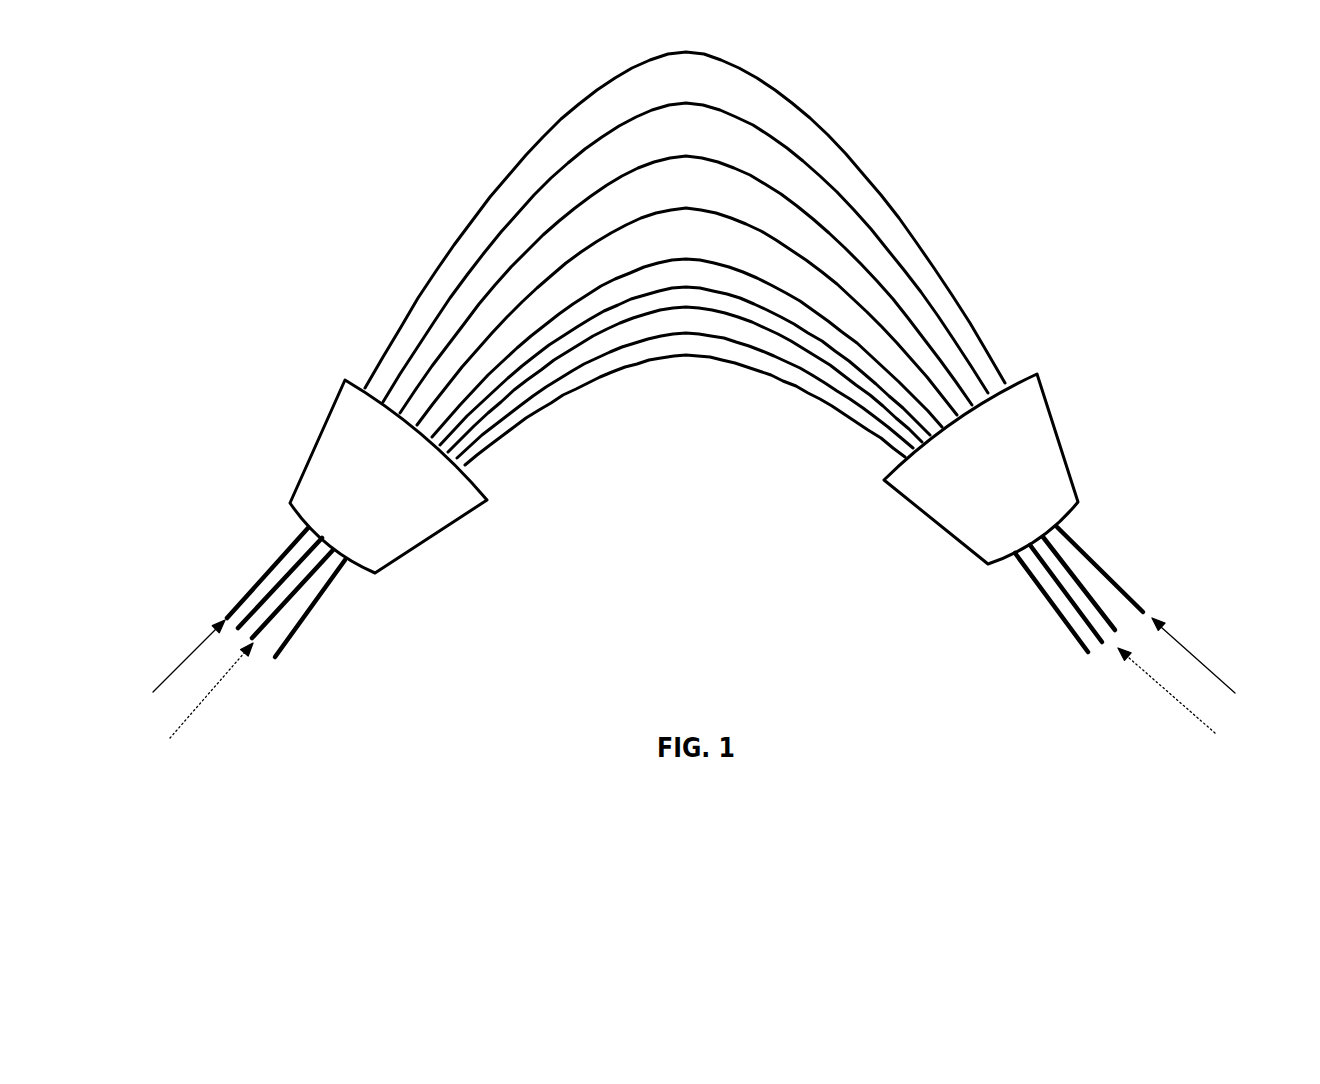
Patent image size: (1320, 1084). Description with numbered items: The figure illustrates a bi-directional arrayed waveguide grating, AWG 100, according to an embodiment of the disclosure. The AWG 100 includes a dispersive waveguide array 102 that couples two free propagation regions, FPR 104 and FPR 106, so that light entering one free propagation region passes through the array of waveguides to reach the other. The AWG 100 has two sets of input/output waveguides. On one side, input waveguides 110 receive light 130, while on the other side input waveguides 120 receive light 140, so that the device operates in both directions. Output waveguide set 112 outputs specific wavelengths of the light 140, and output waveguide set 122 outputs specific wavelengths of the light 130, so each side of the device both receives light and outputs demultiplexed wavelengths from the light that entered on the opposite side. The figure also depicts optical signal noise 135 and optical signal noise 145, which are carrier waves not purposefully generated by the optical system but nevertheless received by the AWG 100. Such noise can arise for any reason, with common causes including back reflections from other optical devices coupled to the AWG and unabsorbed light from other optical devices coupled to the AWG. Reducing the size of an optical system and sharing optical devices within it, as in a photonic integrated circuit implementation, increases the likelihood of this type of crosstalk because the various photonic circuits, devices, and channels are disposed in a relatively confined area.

The arrayed waveguide grating (AWG) 100 is at (682, 458).
The dispersive waveguide array 102 is at (667, 258).
The free propagation region 104 is at (388, 476).
The free propagation region 106 is at (981, 469).
The input waveguides 110 is at (268, 612).
The output waveguide set 112 is at (218, 542).
The input waveguides 120 is at (1100, 590).
The output waveguide set 122 is at (1065, 598).
The light 130 is at (172, 665).
The optical signal noise 135 is at (199, 704).
The light 140 is at (1213, 661).
The optical signal noise 145 is at (1173, 703).